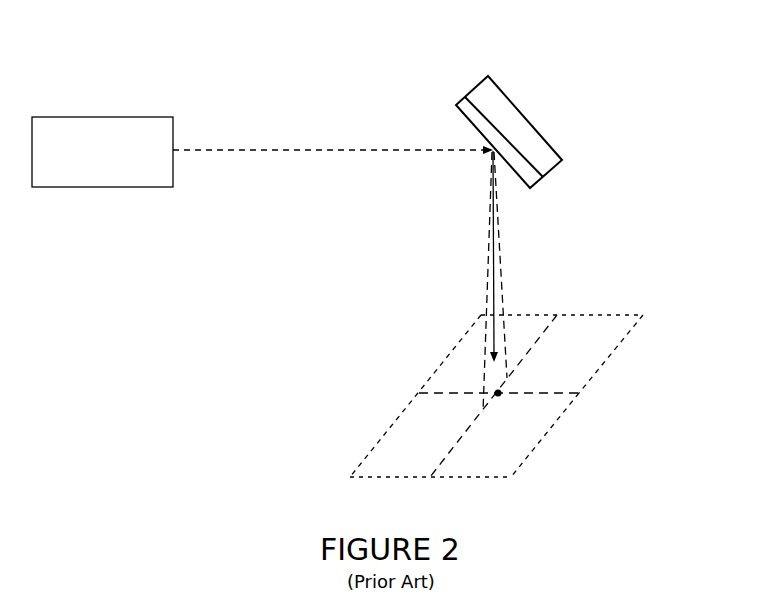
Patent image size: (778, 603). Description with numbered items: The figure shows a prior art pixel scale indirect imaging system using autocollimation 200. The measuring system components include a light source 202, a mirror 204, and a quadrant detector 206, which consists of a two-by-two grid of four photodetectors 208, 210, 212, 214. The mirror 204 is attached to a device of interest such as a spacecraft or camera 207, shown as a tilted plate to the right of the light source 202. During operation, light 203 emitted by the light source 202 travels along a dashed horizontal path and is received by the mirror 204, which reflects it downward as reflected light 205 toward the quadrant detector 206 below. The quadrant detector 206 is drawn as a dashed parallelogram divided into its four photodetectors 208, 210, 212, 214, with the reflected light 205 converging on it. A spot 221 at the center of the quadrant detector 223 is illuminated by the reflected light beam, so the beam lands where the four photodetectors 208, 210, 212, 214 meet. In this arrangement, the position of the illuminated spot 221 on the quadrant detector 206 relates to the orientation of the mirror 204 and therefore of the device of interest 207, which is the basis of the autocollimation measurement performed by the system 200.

The pixel scale indirect imaging system using autocollimation 200 is at (353, 76).
The light source 202 is at (166, 181).
The received light 203 is at (218, 150).
The mirror 204 is at (530, 180).
The reflected light 205 is at (512, 289).
The quadrant detector 206 is at (501, 387).
The device of interest 207 is at (552, 160).
The photodetector 208 is at (468, 347).
The photodetector 210 is at (625, 323).
The photodetector 212 is at (557, 405).
The photodetector 214 is at (368, 470).
The spot 221 is at (493, 410).
The center of the quadrant detector 223 is at (503, 396).